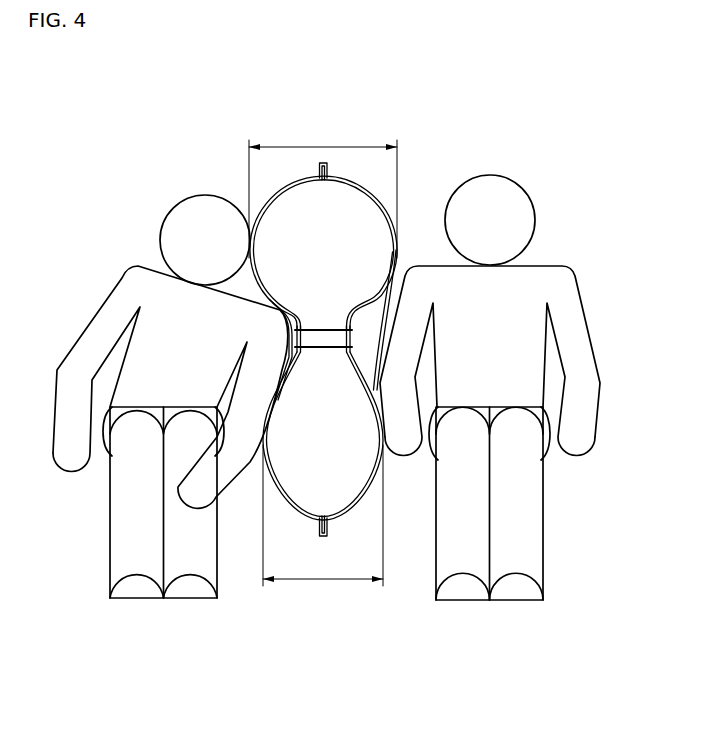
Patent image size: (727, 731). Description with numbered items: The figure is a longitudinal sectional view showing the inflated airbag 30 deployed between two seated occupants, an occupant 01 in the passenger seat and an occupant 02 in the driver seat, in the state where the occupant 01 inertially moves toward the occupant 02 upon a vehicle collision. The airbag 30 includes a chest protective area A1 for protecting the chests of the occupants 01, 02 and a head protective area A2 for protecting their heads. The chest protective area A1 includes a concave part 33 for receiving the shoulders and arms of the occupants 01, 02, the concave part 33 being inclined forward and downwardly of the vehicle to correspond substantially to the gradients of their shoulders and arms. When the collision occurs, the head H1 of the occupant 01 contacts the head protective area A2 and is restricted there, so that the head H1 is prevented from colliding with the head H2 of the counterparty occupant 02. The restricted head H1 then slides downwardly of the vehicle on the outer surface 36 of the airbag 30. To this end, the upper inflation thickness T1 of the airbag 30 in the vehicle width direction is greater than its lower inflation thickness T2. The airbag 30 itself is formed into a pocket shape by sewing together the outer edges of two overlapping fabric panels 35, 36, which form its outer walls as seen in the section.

The airbag 30 is at (351, 357).
The concave part 33 is at (306, 308).
The fabric panel 35 is at (388, 240).
The fabric panel (outer surface) 36 is at (271, 197).
The chest protective area A1 is at (300, 520).
The head protective area A2 is at (276, 188).
The upper inflation thickness T1 is at (323, 188).
The lower inflation thickness T2 is at (323, 515).
The occupant 01 is at (103, 290).
The occupant 02 is at (581, 286).
The head of occupant H1 is at (177, 198).
The head of counterparty occupant H2 is at (532, 190).